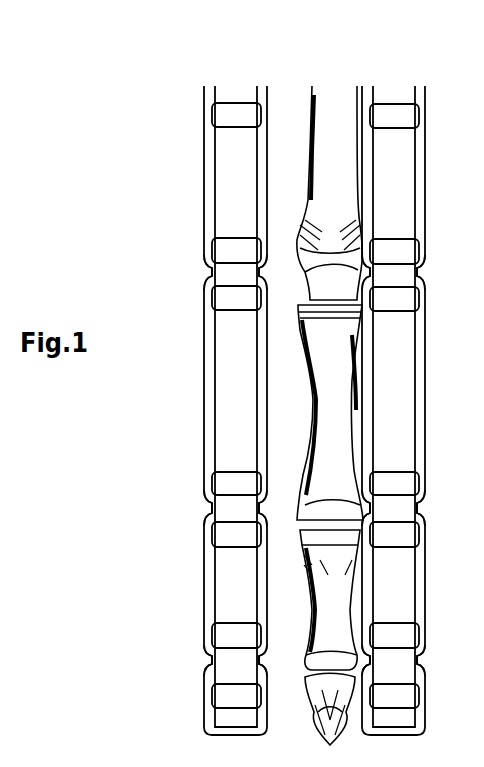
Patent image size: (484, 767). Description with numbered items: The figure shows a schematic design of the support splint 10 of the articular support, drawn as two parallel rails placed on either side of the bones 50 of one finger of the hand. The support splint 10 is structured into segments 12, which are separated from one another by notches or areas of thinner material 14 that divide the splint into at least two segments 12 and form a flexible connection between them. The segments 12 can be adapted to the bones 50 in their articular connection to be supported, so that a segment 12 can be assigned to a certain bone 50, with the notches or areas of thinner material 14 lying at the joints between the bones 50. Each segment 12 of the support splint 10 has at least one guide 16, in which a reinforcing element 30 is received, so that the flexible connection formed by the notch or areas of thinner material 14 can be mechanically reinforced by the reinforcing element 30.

The support splint 10 is at (195, 164).
The segment 12 is at (210, 203).
The notch or area of thinner material 14 is at (212, 272).
The guide 16 is at (236, 252).
The reinforcing element 30 is at (222, 152).
The bone 50 is at (315, 86).